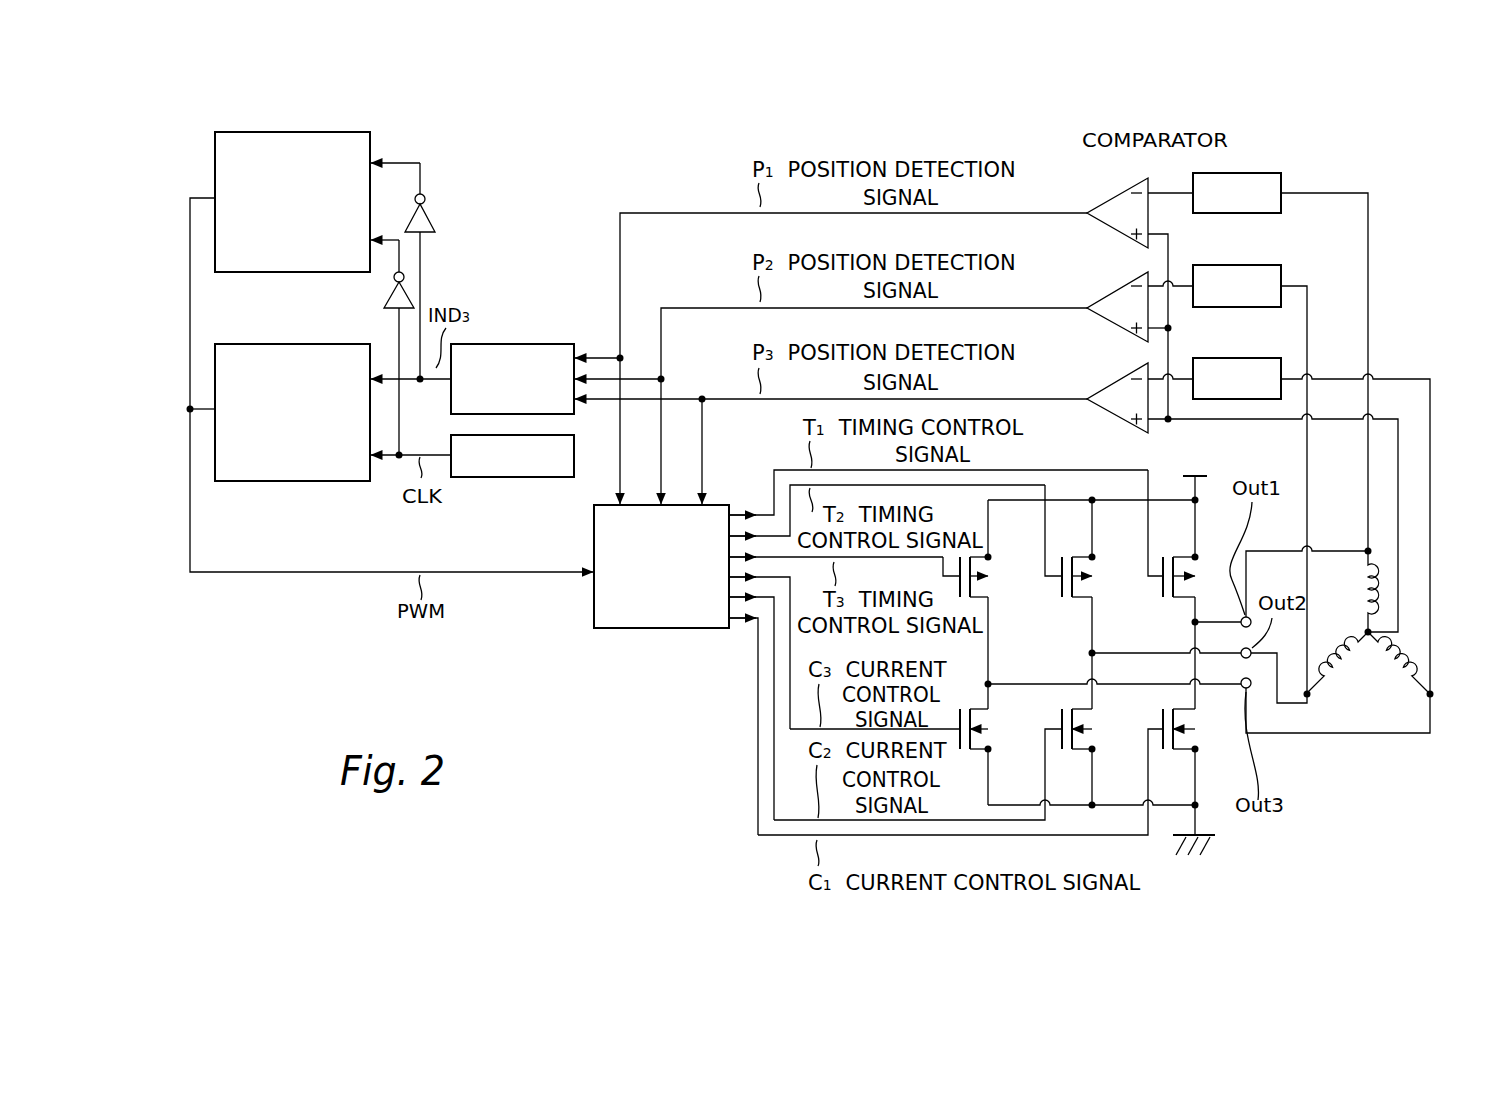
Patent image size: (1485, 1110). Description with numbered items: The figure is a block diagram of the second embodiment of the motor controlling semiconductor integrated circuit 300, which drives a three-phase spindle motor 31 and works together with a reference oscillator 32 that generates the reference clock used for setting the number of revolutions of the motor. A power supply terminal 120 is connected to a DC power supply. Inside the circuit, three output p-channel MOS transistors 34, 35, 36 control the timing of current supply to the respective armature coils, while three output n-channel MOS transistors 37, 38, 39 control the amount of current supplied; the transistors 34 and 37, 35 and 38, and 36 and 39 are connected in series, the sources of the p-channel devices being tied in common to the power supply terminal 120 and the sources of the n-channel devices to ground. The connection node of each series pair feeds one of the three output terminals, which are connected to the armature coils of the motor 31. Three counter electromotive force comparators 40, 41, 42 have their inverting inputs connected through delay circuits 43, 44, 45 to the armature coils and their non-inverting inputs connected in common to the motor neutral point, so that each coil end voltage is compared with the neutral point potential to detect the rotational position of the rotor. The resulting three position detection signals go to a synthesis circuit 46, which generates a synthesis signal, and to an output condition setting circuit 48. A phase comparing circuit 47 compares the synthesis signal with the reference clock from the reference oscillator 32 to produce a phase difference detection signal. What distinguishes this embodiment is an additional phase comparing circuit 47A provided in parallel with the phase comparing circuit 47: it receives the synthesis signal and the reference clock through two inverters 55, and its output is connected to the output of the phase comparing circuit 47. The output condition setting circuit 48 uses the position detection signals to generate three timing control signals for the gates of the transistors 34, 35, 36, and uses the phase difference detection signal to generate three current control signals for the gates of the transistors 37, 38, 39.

The motor controlling semiconductor integrated circuit 300 is at (684, 186).
The additional phase comparing circuit 47A is at (290, 131).
The phase comparing circuit 47 is at (289, 343).
The synthesis circuit 46 is at (509, 343).
The reference oscillator 32 is at (506, 478).
The output condition setting circuit 48 is at (665, 632).
The inverter 55 is at (432, 208).
The counter electromotive force comparator 40 is at (1115, 196).
The counter electromotive force comparator 41 is at (1115, 288).
The counter electromotive force comparator 42 is at (1115, 382).
The delay circuit 43 is at (1250, 172).
The delay circuit 44 is at (1250, 264).
The delay circuit 45 is at (1250, 357).
The power supply terminal 120 is at (1198, 463).
The output p-channel MOS transistor 34 is at (1200, 580).
The output p-channel MOS transistor 35 is at (1099, 578).
The output p-channel MOS transistor 36 is at (996, 578).
The output n-channel MOS transistor 37 is at (1200, 722).
The output n-channel MOS transistor 38 is at (1099, 722).
The output n-channel MOS transistor 39 is at (996, 722).
The three-phase motor 31 is at (1343, 685).